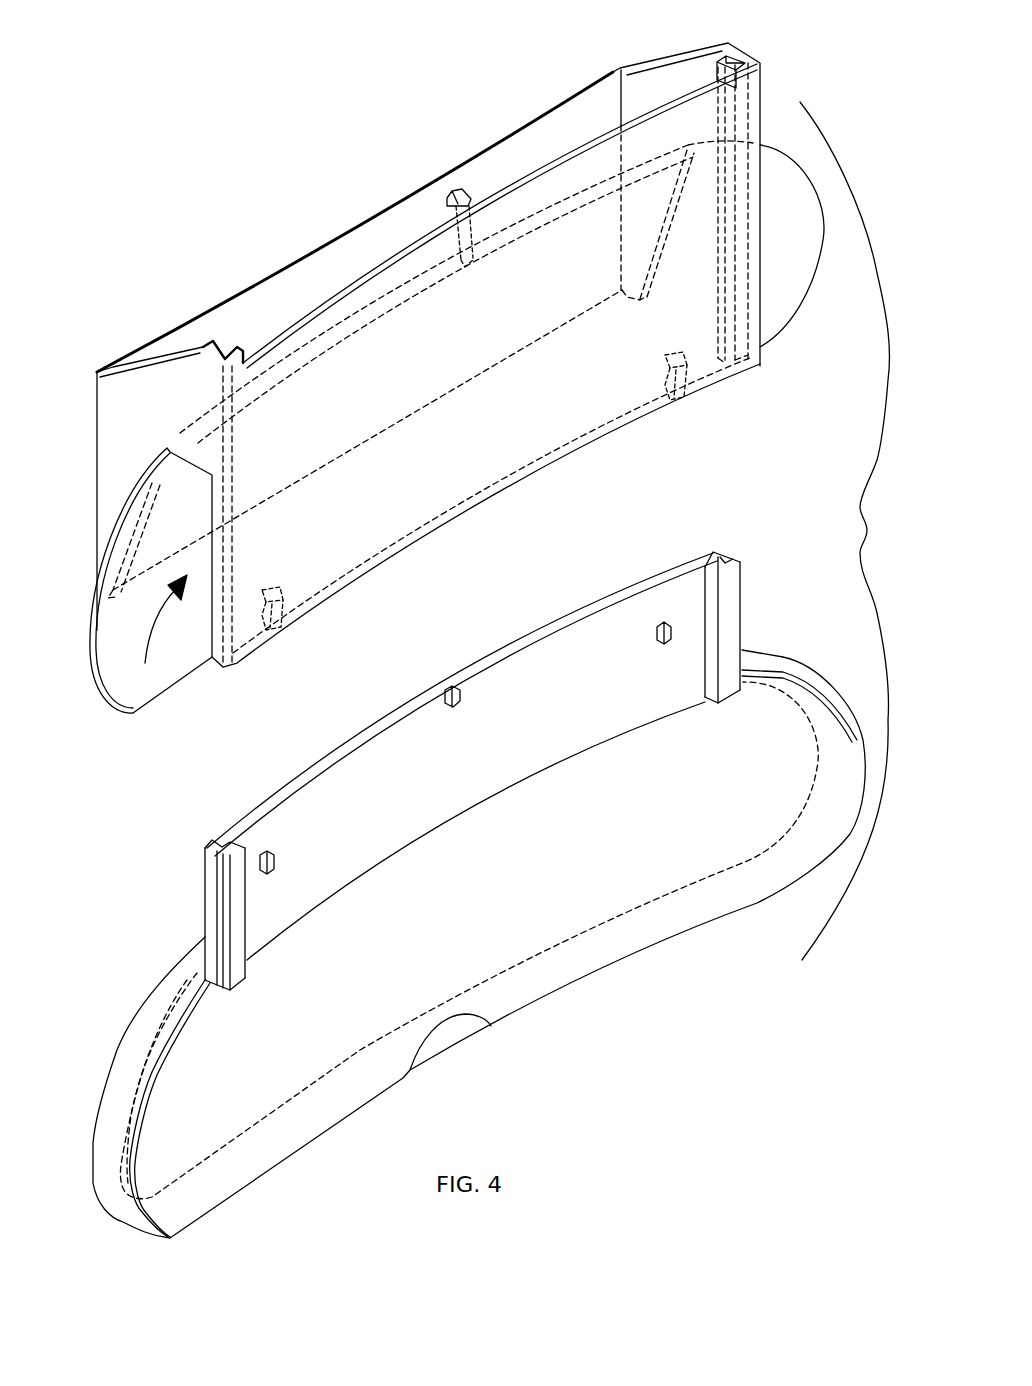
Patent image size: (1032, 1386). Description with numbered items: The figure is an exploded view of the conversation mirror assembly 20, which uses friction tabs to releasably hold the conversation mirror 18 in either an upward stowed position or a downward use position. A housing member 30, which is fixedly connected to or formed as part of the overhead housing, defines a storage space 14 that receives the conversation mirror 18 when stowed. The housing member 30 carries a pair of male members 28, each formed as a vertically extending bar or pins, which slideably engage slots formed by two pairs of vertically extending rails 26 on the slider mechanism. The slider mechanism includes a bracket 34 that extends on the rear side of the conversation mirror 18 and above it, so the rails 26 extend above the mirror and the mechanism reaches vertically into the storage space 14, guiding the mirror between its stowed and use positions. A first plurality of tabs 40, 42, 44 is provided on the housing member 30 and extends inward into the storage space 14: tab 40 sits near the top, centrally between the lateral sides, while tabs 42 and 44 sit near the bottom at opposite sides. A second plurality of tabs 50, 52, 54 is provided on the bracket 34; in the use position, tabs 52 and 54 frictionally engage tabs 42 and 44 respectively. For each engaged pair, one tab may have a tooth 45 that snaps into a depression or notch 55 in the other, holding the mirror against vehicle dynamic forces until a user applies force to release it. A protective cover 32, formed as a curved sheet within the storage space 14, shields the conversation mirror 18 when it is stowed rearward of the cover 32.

The storage space 14 is at (161, 632).
The conversation mirror 18 is at (137, 1053).
The conversation mirror assembly 20 is at (848, 531).
The rails 26 is at (727, 562).
The male members 28 is at (233, 341).
The housing member 30 is at (128, 420).
The protective cover 32 is at (93, 657).
The bracket 34 is at (563, 677).
The tab 40 is at (448, 200).
The tab 42 is at (266, 630).
The tab 44 is at (670, 400).
The tooth 45 is at (445, 204).
The tab 50 is at (443, 692).
The tab 52 is at (267, 850).
The tab 54 is at (657, 627).
The notch 55 is at (667, 640).